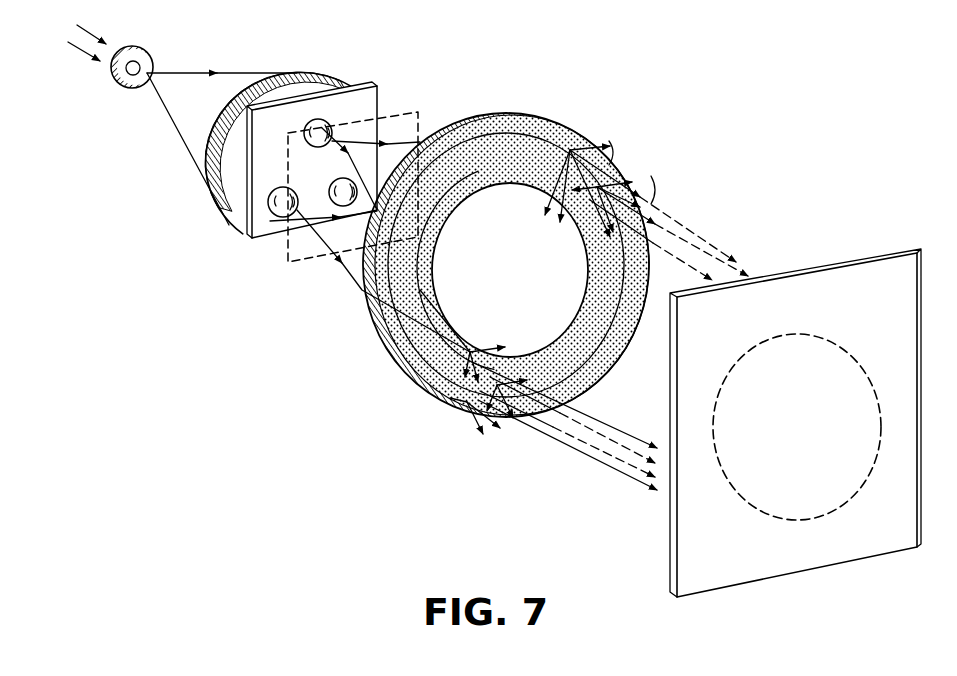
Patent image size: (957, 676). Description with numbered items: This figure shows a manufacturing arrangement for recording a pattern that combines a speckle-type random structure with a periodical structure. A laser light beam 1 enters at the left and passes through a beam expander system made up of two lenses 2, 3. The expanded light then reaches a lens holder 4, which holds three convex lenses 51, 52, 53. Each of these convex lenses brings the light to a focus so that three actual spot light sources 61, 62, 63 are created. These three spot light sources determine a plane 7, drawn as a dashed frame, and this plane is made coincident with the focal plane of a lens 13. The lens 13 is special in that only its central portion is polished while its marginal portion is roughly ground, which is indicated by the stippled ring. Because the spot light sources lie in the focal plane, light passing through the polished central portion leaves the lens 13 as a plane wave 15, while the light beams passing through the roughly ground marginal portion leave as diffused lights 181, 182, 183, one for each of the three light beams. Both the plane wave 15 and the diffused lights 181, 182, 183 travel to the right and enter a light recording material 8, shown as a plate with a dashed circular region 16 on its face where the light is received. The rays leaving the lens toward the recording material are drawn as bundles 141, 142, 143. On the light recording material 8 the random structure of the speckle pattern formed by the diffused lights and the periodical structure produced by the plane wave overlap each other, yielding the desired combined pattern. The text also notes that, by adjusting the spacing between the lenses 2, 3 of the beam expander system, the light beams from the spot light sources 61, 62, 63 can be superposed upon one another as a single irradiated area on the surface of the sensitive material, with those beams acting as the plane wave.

The laser light beam 1 is at (86, 52).
The beam expander system lens 2 is at (139, 49).
The beam expander system lens 3 is at (297, 72).
The lens holder 4 is at (353, 89).
The lens 51 is at (270, 221).
The lens 52 is at (306, 124).
The lens 53 is at (330, 193).
The spot light source 61 is at (313, 217).
The spot light source 62 is at (380, 145).
The spot light source 63 is at (373, 212).
The plane 7 is at (288, 160).
The light recording material 8 is at (850, 262).
The lens 13 is at (520, 112).
The exit ray 141 is at (693, 227).
The exit ray 142 is at (712, 252).
The exit ray 143 is at (676, 257).
The plane wave 15 is at (700, 275).
The image circle 16 is at (787, 517).
The diffused light 181 is at (617, 158).
The diffused light 182 is at (657, 210).
The diffused light 183 is at (497, 445).